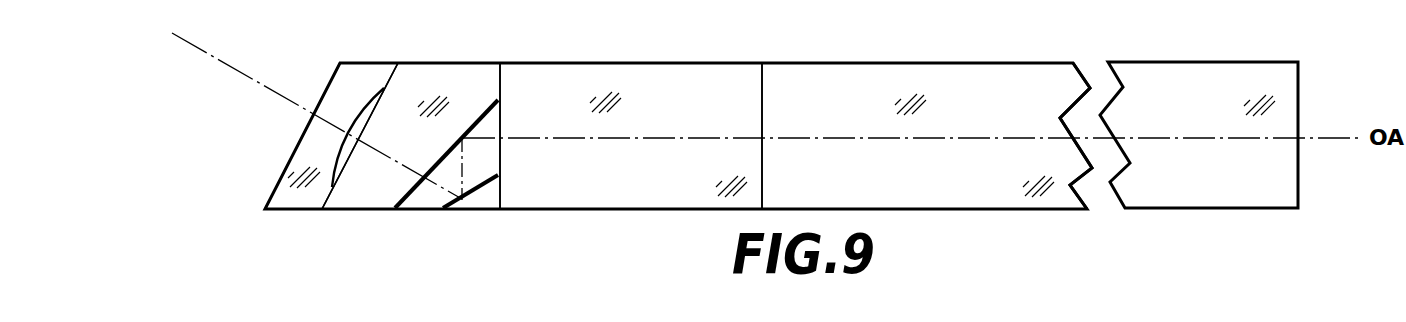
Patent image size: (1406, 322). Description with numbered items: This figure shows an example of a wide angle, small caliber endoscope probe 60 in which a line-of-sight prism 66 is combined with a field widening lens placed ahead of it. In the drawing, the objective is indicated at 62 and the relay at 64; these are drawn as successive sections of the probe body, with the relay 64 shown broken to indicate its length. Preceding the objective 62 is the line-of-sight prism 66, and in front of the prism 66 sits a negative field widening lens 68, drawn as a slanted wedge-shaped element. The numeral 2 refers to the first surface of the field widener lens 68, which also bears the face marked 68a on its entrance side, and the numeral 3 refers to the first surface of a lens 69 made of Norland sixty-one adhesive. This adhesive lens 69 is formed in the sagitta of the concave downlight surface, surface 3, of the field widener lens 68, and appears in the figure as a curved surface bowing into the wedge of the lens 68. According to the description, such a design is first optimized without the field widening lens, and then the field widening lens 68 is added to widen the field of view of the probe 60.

The first surface of field widener lens 2 is at (320, 100).
The first surface of adhesive lens 3 is at (364, 113).
The endoscope probe 60 is at (851, 44).
The objective 62 is at (643, 63).
The relay 64 is at (952, 63).
The line-of-sight prism 66 is at (457, 63).
The negative field widening lens 68 is at (371, 78).
The entrance face of prism 68a is at (290, 162).
The lens of Norland 61 Adhesive 69 is at (347, 150).